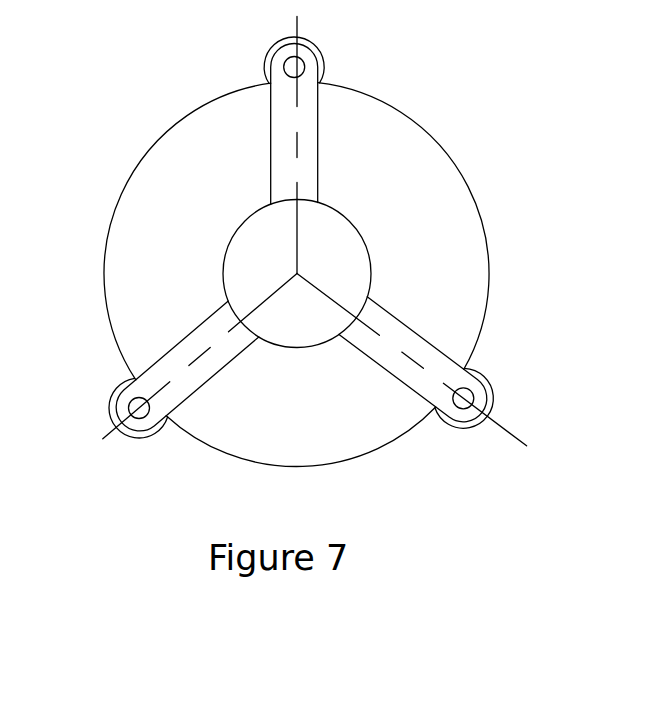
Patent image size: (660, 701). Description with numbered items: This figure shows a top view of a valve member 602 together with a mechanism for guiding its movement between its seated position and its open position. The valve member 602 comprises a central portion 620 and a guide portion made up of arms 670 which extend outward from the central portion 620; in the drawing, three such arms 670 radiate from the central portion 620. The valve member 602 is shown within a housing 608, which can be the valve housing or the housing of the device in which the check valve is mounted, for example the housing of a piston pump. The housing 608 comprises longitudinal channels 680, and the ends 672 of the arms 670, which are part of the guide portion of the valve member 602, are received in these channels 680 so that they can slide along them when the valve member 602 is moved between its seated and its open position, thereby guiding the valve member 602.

The valve member 602 is at (360, 155).
The housing 608 is at (90, 162).
The central portion 620 is at (347, 256).
The arms 670 is at (418, 348).
The longitudinal channels 680 is at (493, 391).
The ends 672 is at (462, 425).